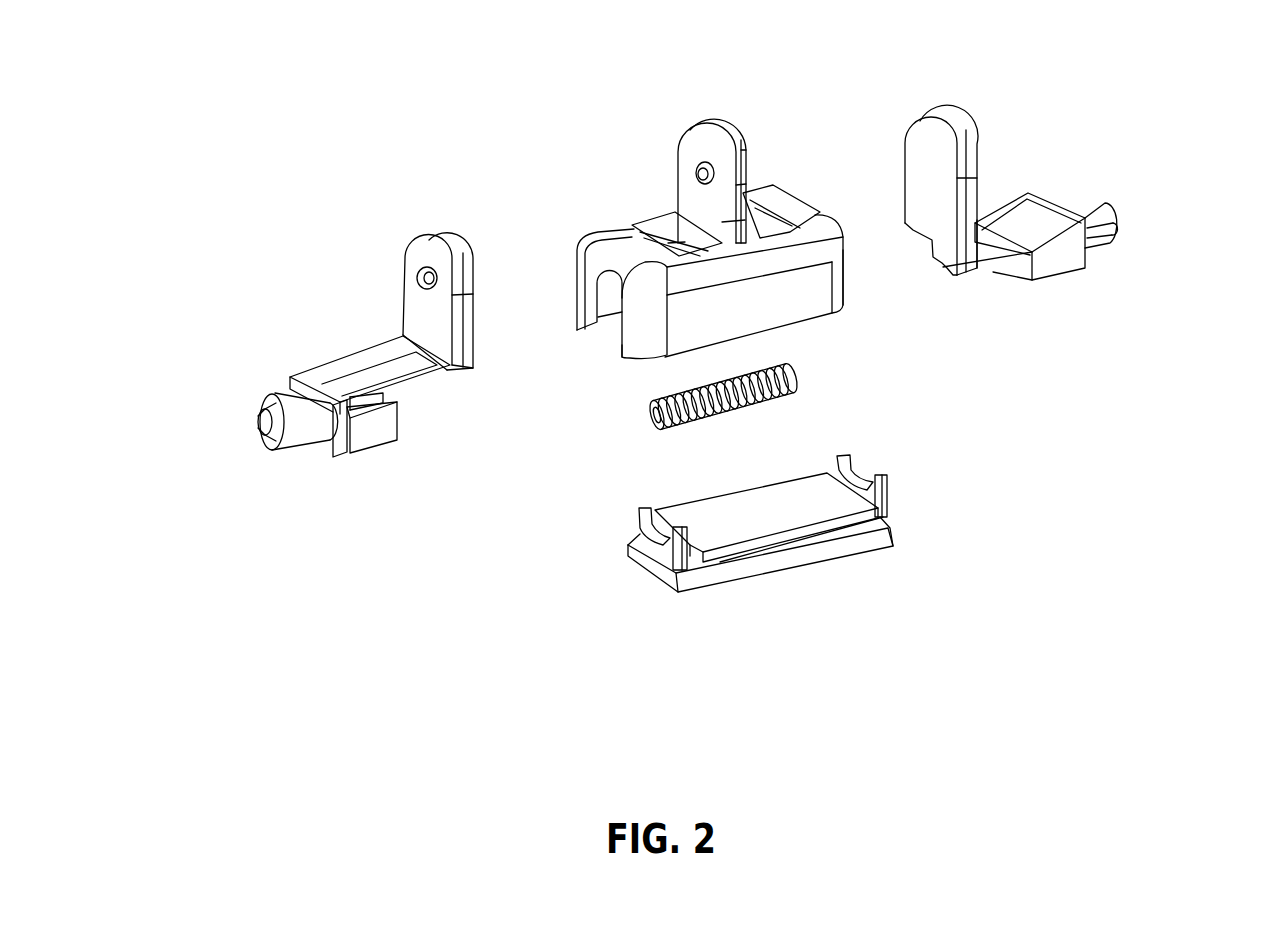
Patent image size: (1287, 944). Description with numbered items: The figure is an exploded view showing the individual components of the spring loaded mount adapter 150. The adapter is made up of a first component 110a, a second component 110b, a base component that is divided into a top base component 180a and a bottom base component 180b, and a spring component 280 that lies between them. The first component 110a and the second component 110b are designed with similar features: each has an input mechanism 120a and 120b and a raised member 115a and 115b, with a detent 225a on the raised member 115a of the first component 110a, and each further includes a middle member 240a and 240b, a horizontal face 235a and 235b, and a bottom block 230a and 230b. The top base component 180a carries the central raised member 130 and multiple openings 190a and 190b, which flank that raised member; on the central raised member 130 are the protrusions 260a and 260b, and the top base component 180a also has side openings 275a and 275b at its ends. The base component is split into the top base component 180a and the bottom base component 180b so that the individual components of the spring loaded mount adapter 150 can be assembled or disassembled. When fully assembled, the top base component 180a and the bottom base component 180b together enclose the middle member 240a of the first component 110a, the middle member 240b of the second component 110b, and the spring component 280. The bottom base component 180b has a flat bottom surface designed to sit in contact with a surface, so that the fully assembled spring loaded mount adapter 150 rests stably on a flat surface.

The first component 110a is at (336, 355).
The second component 110b is at (1043, 204).
The raised member 115a is at (384, 258).
The raised member 115b is at (925, 150).
The input mechanism 120a is at (250, 443).
The input mechanism 120b is at (1118, 253).
The central raised member 130 is at (650, 151).
The spring loaded mount adapter 150 is at (690, 345).
The top base component 180a is at (714, 236).
The bottom base component 180b is at (736, 527).
The opening 190a is at (765, 229).
The opening 190b is at (655, 227).
The detent 225a is at (423, 275).
The bottom block 230a is at (411, 432).
The bottom block 230b is at (1022, 269).
The horizontal face 235a is at (418, 370).
The horizontal face 235b is at (997, 209).
The middle member 240a is at (348, 362).
The middle member 240b is at (1022, 216).
The protrusion 260a is at (749, 148).
The protrusion 260b is at (698, 178).
The side opening 275a is at (612, 351).
The side opening 275b is at (851, 253).
The spring component 280 is at (808, 389).